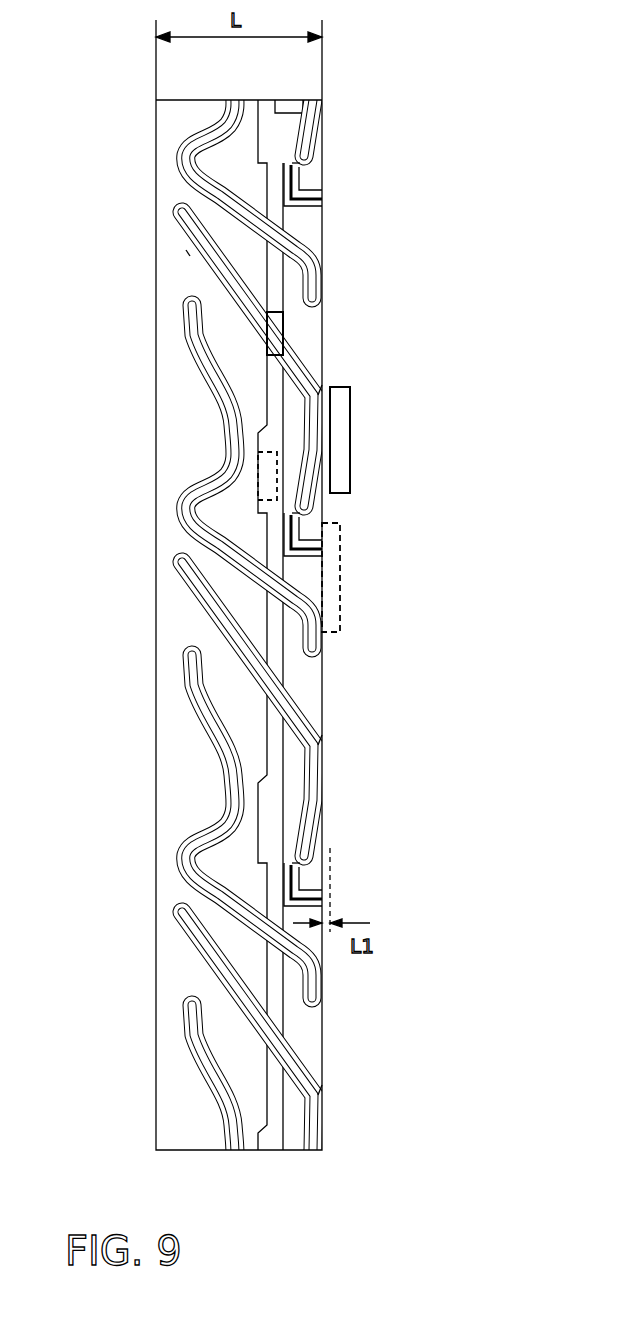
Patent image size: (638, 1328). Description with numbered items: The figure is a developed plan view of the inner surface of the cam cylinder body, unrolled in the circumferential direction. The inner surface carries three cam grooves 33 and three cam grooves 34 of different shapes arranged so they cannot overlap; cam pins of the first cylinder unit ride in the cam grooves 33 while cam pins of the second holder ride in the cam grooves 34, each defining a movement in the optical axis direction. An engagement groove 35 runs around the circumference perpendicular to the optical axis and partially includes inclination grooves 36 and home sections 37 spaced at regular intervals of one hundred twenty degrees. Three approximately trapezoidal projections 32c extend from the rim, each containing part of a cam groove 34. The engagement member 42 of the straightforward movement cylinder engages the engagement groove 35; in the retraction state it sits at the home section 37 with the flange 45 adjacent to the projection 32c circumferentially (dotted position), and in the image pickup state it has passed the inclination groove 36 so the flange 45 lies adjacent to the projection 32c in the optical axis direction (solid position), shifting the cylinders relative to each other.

The projection 32c is at (322, 390).
The cam groove 33 is at (205, 128).
The cam groove 34 is at (185, 250).
The engagement groove 35 is at (185, 250).
The inclination groove 36 is at (262, 428).
The home section 37 is at (282, 140).
The engagement member 42 is at (283, 310).
The flange 45 is at (350, 400).